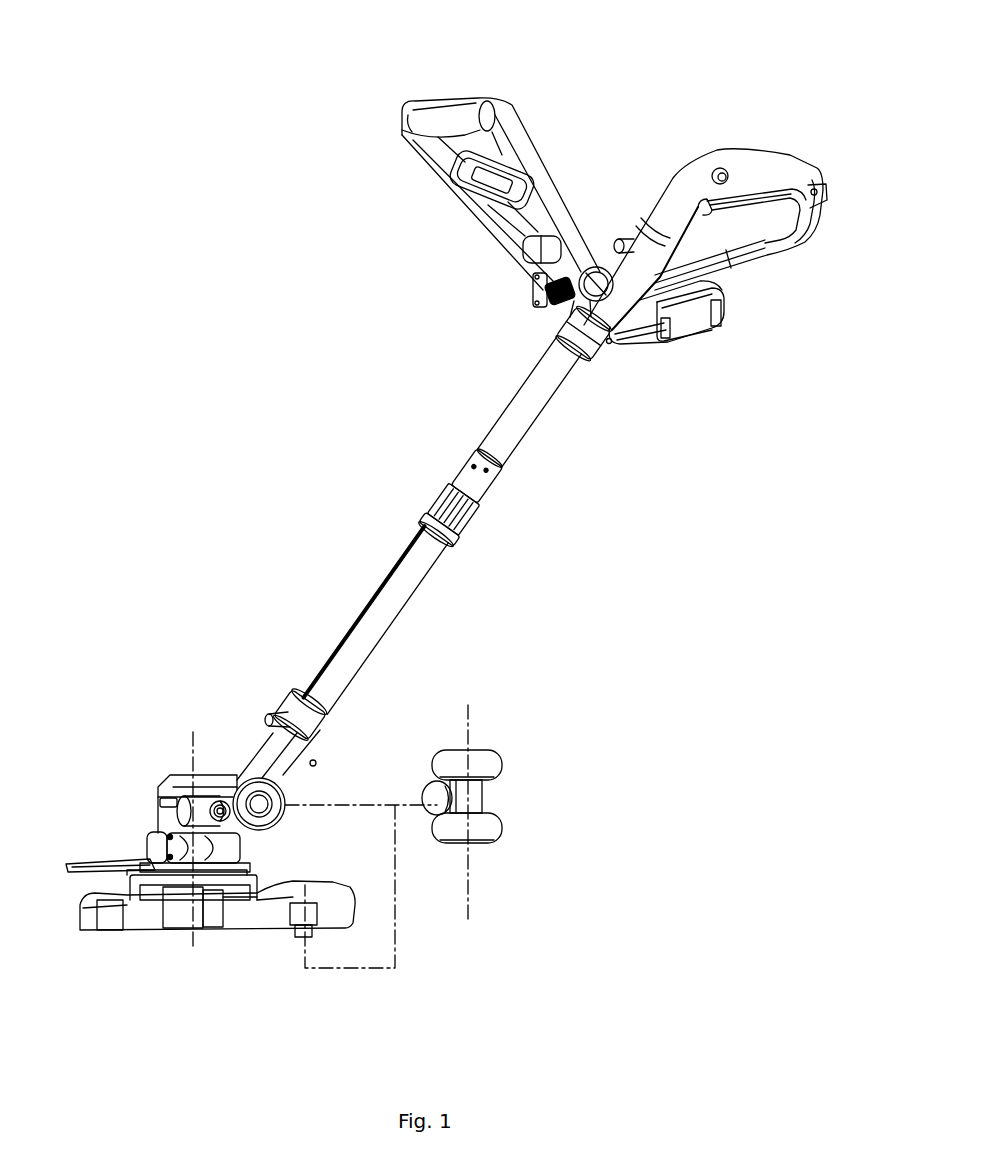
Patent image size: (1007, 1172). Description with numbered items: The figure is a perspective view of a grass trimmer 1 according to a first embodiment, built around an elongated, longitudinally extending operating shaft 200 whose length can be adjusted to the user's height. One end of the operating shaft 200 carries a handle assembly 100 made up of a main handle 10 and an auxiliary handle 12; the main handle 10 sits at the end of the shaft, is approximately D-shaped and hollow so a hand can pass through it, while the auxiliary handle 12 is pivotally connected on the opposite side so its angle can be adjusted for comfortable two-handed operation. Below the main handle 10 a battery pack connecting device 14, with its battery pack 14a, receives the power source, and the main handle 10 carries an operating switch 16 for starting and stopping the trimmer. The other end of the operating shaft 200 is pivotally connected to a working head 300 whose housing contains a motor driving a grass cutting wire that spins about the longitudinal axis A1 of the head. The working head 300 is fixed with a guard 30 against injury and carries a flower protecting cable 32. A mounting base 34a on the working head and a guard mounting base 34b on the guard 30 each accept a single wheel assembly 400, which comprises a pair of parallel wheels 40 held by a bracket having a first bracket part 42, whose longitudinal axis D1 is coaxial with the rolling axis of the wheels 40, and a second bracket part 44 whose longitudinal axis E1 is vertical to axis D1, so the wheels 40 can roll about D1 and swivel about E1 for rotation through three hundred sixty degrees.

The grass trimmer 1 is at (358, 390).
The handle assembly 100 is at (635, 160).
The main handle 10 is at (770, 173).
The auxiliary handle 12 is at (437, 113).
The battery pack connecting device 14 is at (653, 300).
The battery pack 14a is at (715, 327).
The operating switch 16 is at (748, 192).
The operating shaft 200 is at (358, 570).
The working head 300 is at (155, 733).
The guard 30 is at (285, 897).
The flower protecting cable 32 is at (87, 863).
The mounting base 34a is at (205, 808).
The guard mounting base 34b is at (297, 933).
The wheel assembly 400 is at (478, 732).
The wheels 40 is at (485, 765).
The first bracket part 42 is at (473, 802).
The second bracket part 44 is at (430, 782).
The longitudinal axis of the working head A1 is at (194, 829).
The longitudinal axis of the first bracket part D1 is at (477, 826).
The longitudinal axis of the second bracket part E1 is at (361, 886).